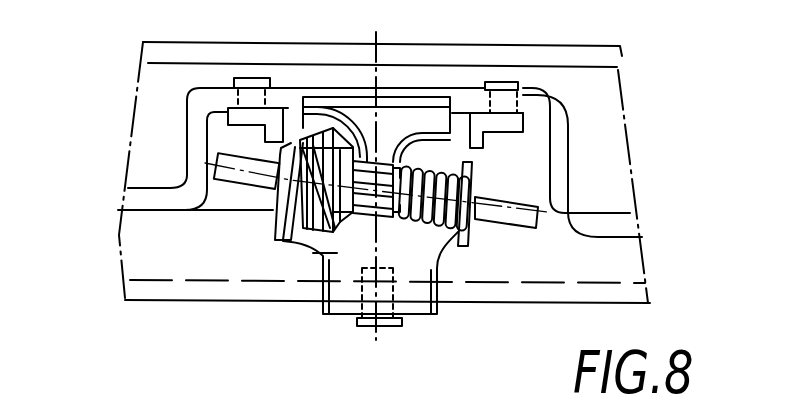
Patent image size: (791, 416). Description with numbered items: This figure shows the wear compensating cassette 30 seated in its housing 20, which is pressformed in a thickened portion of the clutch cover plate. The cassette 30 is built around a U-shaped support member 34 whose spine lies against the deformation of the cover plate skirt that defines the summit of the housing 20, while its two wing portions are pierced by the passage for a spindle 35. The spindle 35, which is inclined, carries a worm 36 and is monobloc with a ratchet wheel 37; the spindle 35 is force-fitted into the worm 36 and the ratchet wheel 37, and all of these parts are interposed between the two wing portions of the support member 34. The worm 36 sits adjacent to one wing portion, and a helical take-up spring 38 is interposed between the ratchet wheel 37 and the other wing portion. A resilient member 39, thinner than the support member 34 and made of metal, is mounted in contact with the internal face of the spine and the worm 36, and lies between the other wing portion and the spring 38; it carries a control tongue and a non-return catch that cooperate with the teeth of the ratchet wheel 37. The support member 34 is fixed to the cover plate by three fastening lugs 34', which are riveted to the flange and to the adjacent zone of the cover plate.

The housing 20 is at (195, 142).
The cassette 30 is at (264, 222).
The U-shaped support member 34 is at (357, 245).
The fastening lugs 34' is at (396, 188).
The spindle 35 is at (237, 178).
The worm 36 is at (283, 241).
The ratchet wheel 37 is at (392, 192).
The helical take-up spring 38 is at (447, 232).
The resilient member 39 is at (415, 122).